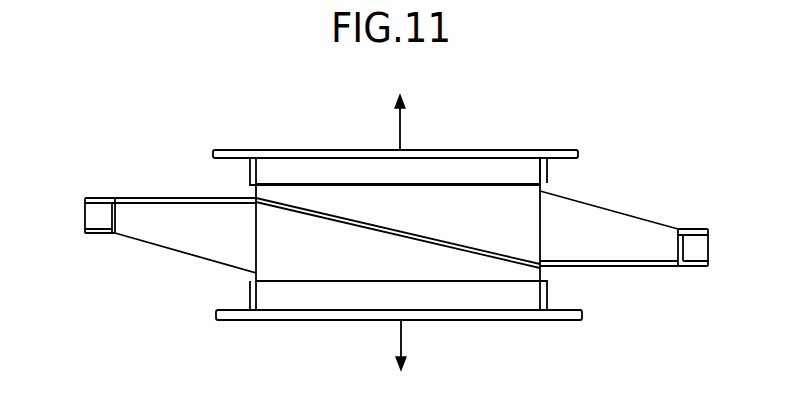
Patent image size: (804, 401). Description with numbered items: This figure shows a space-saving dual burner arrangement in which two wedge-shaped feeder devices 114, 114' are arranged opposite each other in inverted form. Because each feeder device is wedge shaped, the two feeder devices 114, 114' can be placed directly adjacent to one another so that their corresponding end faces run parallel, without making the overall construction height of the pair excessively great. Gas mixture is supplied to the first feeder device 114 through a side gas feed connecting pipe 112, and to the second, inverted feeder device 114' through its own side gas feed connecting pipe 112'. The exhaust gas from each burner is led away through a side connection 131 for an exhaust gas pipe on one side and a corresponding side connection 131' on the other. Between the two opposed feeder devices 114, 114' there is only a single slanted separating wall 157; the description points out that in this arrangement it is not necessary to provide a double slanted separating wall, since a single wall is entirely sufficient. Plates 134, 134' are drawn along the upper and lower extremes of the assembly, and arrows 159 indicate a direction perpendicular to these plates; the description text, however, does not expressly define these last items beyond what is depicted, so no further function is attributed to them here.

The side gas feed connecting pipe 112 is at (709, 268).
The side gas feed connecting pipe 112' is at (81, 237).
The feeder device 114 is at (609, 192).
The feeder device 114' is at (185, 266).
The side connection for exhaust gas pipe 131 is at (609, 285).
The side connection for exhaust gas pipe 131' is at (185, 175).
The plate 134 is at (399, 126).
The plate 134' is at (399, 337).
The slanted separating wall 157 is at (373, 230).
The force direction arrow 159 is at (400, 130).